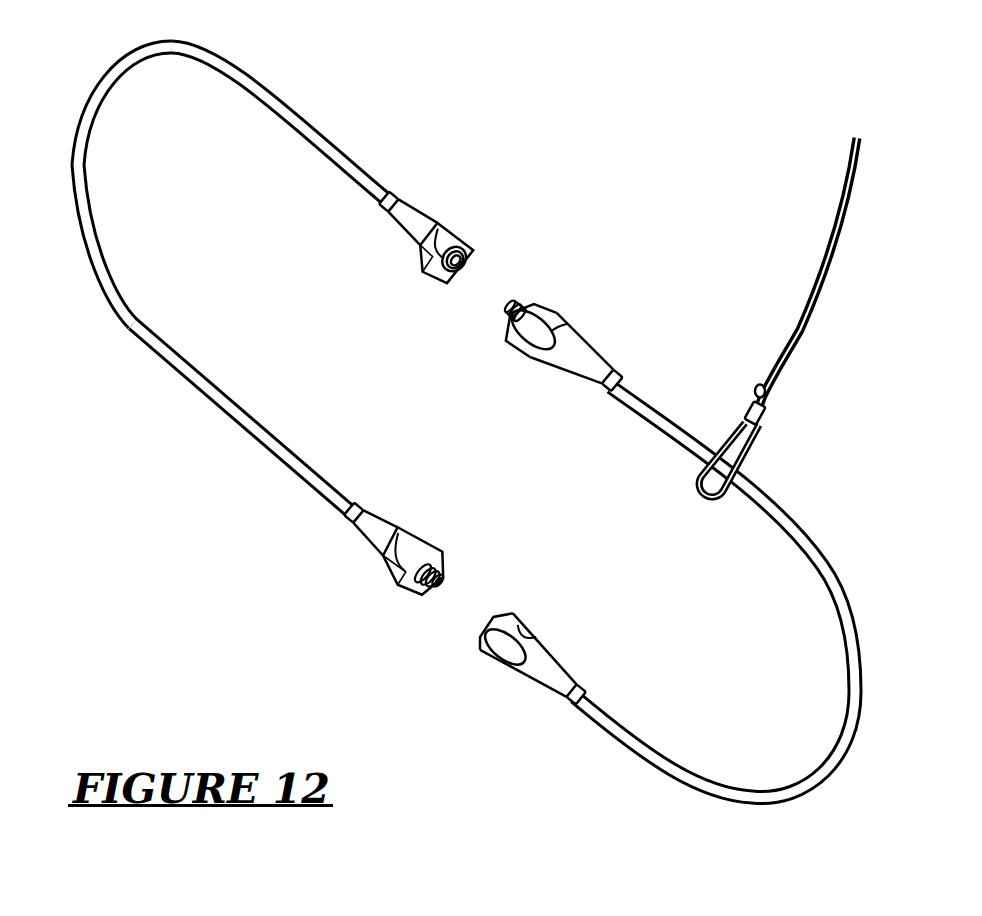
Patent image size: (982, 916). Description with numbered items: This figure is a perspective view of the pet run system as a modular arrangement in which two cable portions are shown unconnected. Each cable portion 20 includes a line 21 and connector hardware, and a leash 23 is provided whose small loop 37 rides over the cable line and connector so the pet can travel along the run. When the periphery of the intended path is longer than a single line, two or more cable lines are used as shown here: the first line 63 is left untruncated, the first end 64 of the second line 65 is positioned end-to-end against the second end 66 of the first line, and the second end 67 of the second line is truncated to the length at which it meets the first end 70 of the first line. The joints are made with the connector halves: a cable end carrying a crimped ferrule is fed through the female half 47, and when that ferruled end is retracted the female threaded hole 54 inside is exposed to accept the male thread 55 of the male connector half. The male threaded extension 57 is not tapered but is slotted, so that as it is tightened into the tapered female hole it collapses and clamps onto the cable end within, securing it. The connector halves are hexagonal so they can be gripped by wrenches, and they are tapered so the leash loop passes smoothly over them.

The cable portion 20 is at (435, 434).
The line 21 is at (466, 402).
The leash 23 is at (737, 324).
The small loop 37 is at (695, 472).
The female half 47 is at (477, 435).
The female threaded hole 54 is at (454, 259).
The male thread 55 is at (480, 438).
The male threaded extension 57 is at (510, 313).
The first line 63 is at (660, 773).
The first end 64 is at (440, 254).
The second line 65 is at (100, 107).
The second end 66 is at (525, 343).
The second end 67 is at (452, 578).
The first end 70 is at (480, 627).